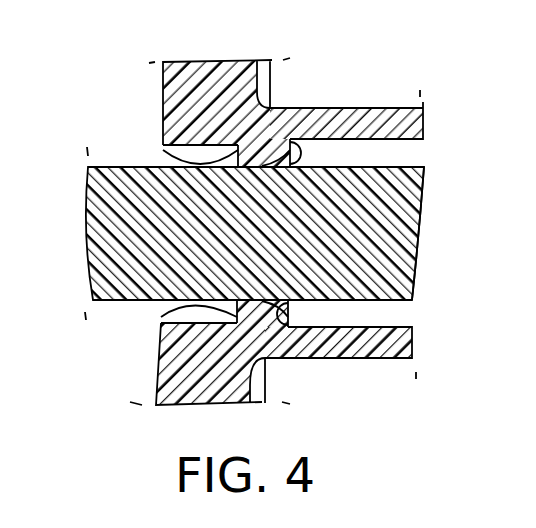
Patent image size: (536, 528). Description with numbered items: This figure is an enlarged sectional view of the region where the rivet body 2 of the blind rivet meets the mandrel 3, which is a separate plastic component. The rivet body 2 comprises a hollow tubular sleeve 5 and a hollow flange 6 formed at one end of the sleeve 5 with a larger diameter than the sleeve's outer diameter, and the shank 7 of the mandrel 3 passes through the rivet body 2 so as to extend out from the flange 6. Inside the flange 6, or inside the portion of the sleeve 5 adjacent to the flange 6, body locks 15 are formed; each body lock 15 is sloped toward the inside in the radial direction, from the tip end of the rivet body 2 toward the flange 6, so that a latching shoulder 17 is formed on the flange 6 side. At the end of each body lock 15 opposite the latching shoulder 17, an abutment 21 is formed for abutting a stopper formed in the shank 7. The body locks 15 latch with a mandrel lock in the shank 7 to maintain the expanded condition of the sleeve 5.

The rivet body 2 is at (399, 100).
The mandrel 3 is at (431, 236).
The sleeve 5 is at (388, 345).
The flange 6 is at (176, 86).
The shank 7 is at (118, 265).
The body lock 15 is at (304, 160).
The latching shoulder 17 is at (178, 146).
The abutment 21 is at (301, 164).